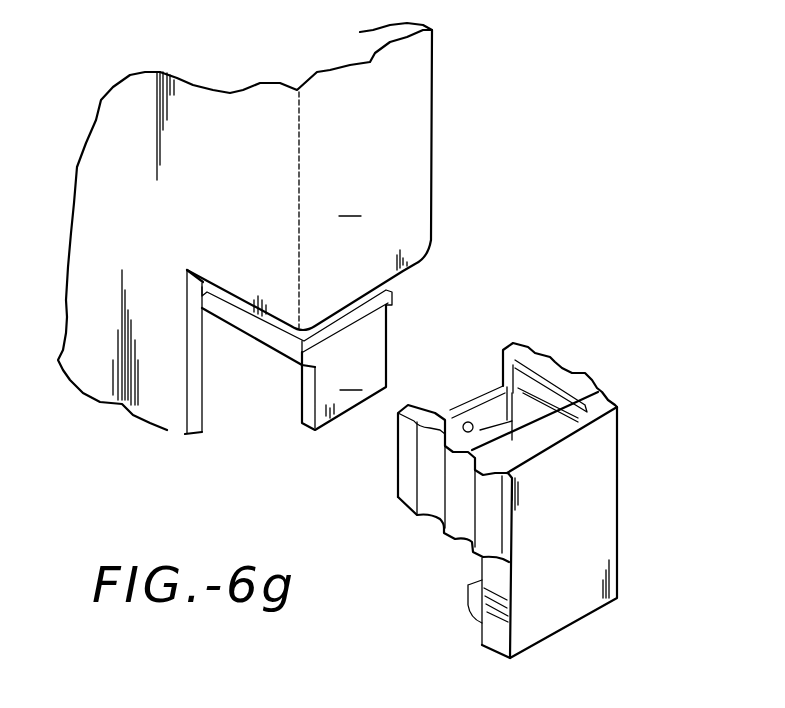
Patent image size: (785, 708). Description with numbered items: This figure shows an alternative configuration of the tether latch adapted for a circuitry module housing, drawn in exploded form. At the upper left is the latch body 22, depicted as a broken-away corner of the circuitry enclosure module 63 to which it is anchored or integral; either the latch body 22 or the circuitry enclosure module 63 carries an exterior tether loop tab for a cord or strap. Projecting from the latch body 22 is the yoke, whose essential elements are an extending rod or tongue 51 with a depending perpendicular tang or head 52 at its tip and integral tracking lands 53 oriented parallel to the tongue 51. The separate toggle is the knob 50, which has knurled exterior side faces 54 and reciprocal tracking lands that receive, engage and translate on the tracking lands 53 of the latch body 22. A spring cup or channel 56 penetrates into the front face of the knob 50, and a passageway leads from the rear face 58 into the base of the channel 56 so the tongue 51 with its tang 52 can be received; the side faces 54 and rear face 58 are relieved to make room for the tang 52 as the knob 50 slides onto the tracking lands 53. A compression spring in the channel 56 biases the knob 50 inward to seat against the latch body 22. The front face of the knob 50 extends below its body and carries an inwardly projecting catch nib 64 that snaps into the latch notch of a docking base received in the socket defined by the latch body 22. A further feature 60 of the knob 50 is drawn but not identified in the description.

The latch body 22 is at (351, 365).
The circuitry enclosure module 63 is at (231, 92).
The extending rod or tongue 51 is at (319, 352).
The tang 52 is at (344, 367).
The tracking lands 53 is at (398, 305).
The knob 50 is at (515, 493).
The knurled exterior side faces 54 is at (602, 392).
The spring cup or channel 56 is at (520, 437).
The rear face 58 is at (470, 406).
The channel floor 60 is at (477, 418).
The catch nib 64 is at (468, 607).